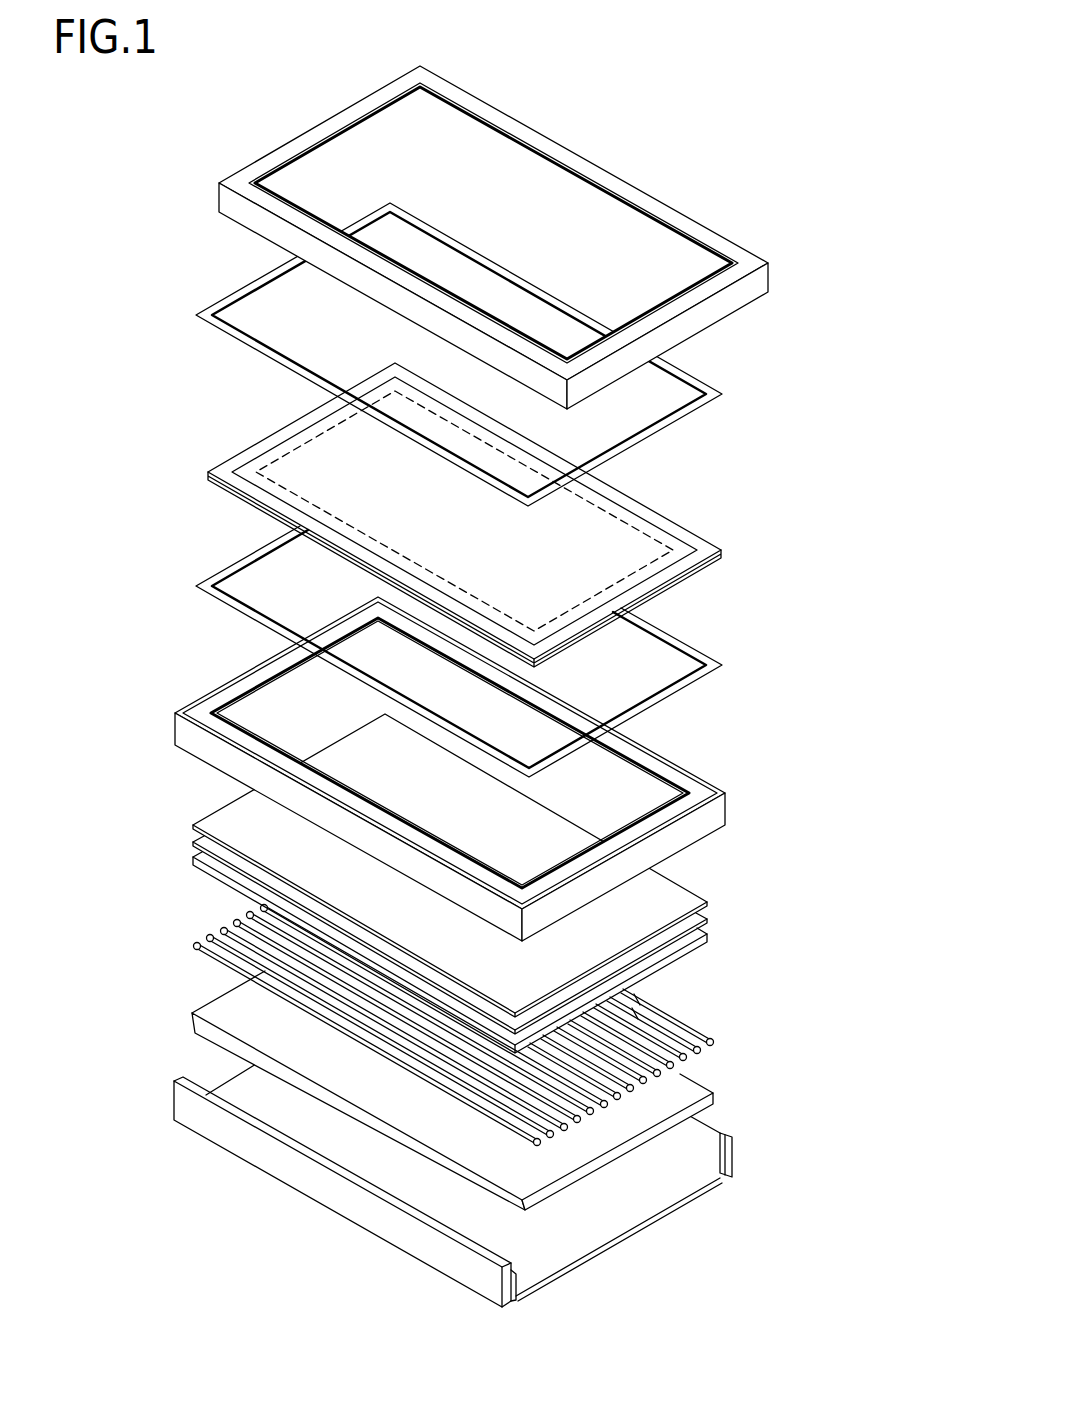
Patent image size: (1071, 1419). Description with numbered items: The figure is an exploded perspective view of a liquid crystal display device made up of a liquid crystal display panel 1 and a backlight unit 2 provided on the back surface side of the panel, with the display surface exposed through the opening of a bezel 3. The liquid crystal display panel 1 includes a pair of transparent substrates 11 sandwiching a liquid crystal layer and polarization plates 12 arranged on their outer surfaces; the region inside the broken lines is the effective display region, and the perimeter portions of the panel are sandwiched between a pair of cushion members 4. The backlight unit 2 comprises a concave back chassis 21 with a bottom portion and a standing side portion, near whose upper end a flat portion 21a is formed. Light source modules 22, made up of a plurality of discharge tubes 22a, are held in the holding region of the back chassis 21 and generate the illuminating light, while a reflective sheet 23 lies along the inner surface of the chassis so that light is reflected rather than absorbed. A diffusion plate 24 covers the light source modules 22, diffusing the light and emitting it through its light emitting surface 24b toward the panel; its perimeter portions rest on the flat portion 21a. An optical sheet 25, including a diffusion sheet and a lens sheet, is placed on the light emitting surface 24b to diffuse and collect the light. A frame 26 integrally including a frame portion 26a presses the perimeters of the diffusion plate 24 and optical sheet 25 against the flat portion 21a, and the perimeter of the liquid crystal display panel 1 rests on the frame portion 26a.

The liquid crystal display panel 1 is at (190, 428).
The backlight unit 2 is at (157, 668).
The bezel 3 is at (218, 180).
The cushion member 4 is at (218, 303).
The transparent substrate 11 is at (723, 553).
The polarization plate 12 is at (722, 549).
The back chassis 21 is at (733, 1152).
The flat portion 21a is at (708, 1133).
The light source module 22 is at (695, 1028).
The discharge tube 22a is at (637, 1000).
The reflective sheet 23 is at (714, 1092).
The diffusion plate 24 is at (708, 940).
The light emitting surface 24b is at (708, 933).
The optical sheet 25 is at (708, 901).
The frame 26 is at (728, 810).
The frame portion 26a is at (682, 788).